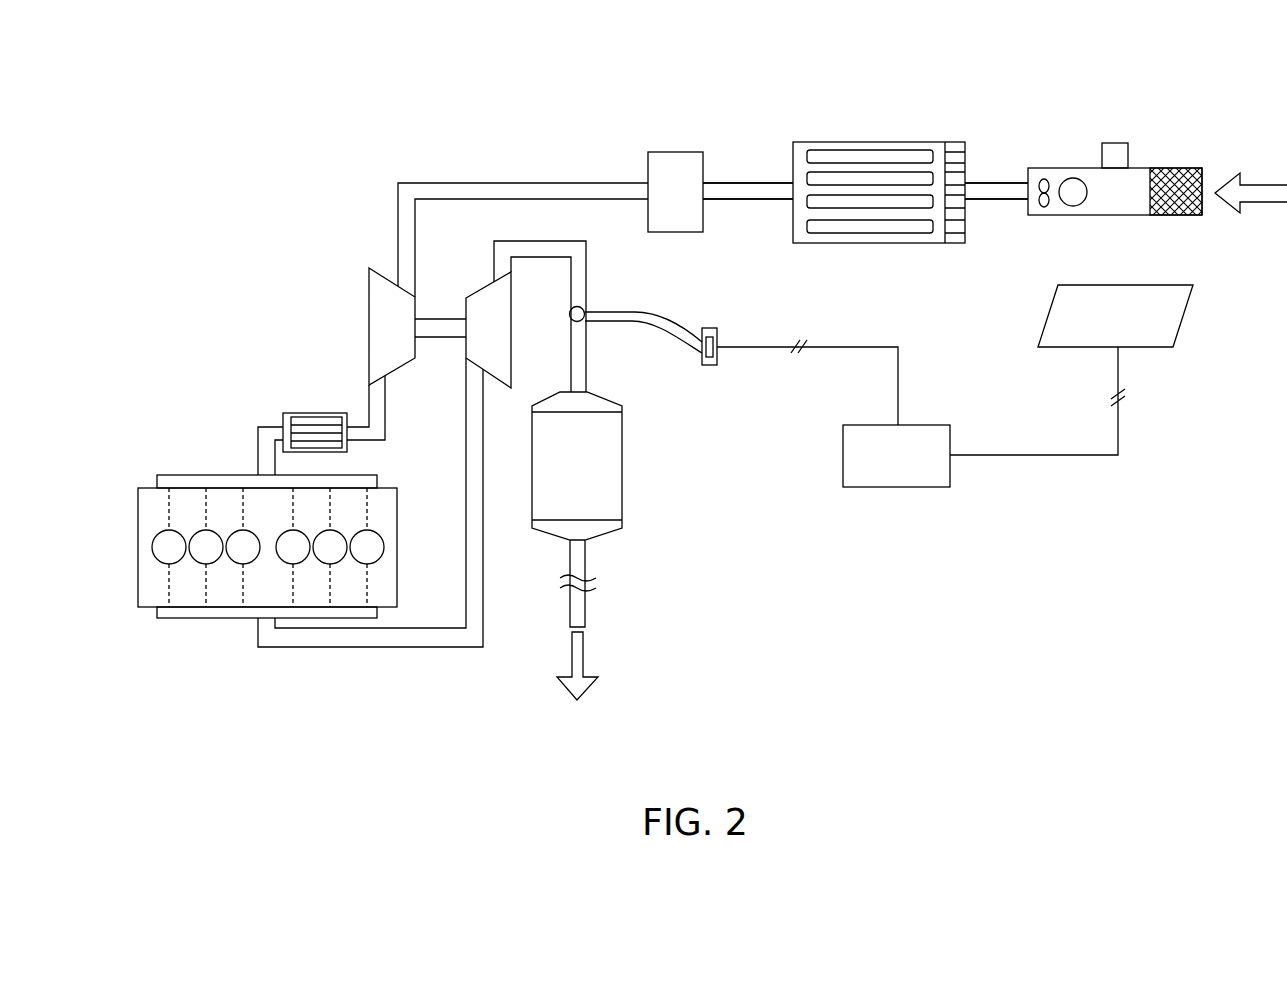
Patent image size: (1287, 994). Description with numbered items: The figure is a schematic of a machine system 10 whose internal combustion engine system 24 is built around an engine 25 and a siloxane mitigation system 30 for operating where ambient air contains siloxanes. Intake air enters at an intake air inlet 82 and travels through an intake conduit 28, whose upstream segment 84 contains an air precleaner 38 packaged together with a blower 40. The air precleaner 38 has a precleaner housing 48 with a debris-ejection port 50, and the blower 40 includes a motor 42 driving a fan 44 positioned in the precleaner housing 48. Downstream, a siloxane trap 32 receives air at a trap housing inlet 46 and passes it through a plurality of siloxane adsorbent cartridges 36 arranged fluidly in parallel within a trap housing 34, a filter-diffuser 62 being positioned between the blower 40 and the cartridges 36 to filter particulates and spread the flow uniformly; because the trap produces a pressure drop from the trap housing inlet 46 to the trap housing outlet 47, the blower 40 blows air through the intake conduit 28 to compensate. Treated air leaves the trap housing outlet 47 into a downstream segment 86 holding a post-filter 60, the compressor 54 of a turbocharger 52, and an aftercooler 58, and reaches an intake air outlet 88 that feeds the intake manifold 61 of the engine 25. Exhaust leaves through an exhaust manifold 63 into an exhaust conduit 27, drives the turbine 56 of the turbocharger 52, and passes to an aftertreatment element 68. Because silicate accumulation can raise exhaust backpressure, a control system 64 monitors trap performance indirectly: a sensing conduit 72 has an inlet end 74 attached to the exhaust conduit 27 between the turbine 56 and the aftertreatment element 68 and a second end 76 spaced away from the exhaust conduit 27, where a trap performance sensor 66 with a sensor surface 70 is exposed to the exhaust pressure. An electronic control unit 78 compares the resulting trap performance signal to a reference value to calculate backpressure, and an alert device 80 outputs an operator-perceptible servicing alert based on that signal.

The machine system 10 is at (172, 200).
The internal combustion engine system 24 is at (118, 430).
The engine 25 is at (138, 528).
The exhaust conduit 27 is at (438, 648).
The intake conduit 28 is at (440, 183).
The siloxane mitigation system 30 is at (1078, 92).
The siloxane trap 32 is at (818, 142).
The trap housing 34 is at (812, 243).
The siloxane adsorbent cartridges 36 is at (897, 143).
The air precleaner 38 is at (1135, 220).
The blower 40 is at (1045, 208).
The motor 42 is at (1073, 207).
The fan 44 is at (1030, 200).
The trap housing inlet 46 is at (968, 210).
The trap housing outlet 47 is at (790, 178).
The precleaner housing 48 is at (1135, 168).
The debris-ejection port 50 is at (1113, 143).
The turbocharger 52 is at (356, 289).
The compressor 54 is at (371, 328).
The turbine 56 is at (508, 328).
The aftercooler 58 is at (325, 412).
The post-filter 60 is at (672, 152).
The intake manifold 61 is at (172, 478).
The filter-diffuser 62 is at (955, 142).
The exhaust manifold 63 is at (168, 620).
The control system 64 is at (850, 495).
The trap performance sensor 66 is at (707, 327).
The aftertreatment element 68 is at (628, 466).
The sensor surface 70 is at (707, 366).
The sensing conduit 72 is at (636, 323).
The inlet end 74 is at (568, 312).
The second end 76 is at (690, 357).
The electronic control unit 78 is at (910, 488).
The alert device 80 is at (1188, 313).
The intake air inlet 82 is at (1215, 160).
The upstream segment 84 is at (1015, 183).
The downstream segment 86 is at (388, 405).
The intake air outlet 88 is at (256, 470).